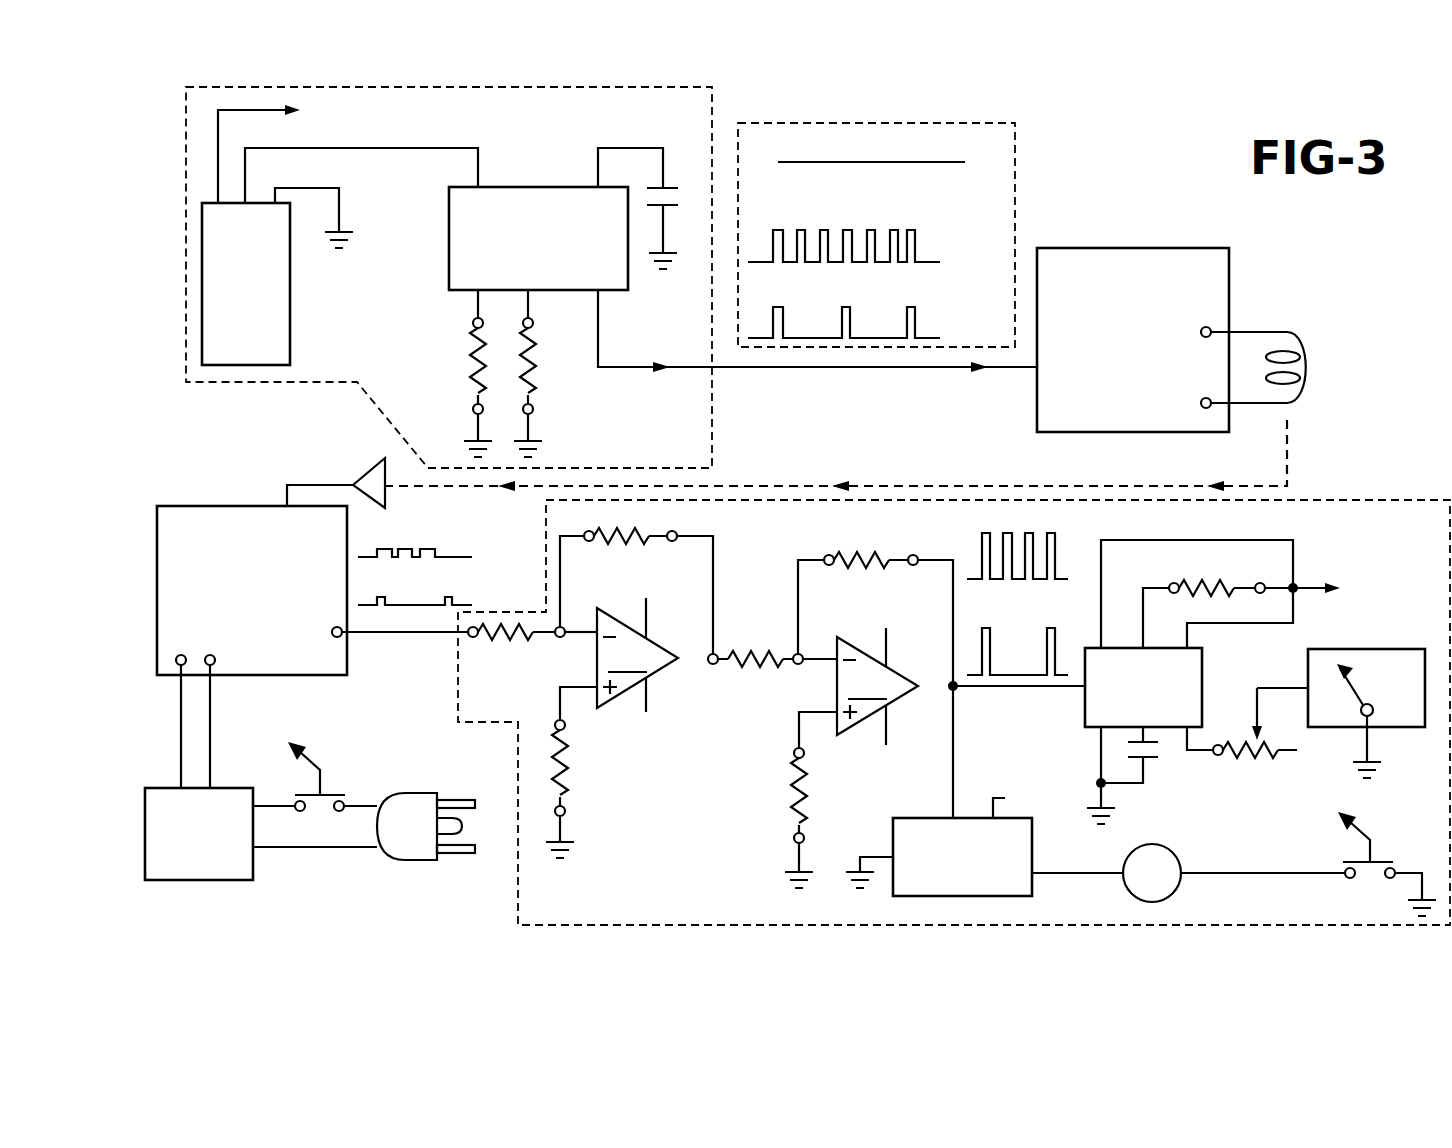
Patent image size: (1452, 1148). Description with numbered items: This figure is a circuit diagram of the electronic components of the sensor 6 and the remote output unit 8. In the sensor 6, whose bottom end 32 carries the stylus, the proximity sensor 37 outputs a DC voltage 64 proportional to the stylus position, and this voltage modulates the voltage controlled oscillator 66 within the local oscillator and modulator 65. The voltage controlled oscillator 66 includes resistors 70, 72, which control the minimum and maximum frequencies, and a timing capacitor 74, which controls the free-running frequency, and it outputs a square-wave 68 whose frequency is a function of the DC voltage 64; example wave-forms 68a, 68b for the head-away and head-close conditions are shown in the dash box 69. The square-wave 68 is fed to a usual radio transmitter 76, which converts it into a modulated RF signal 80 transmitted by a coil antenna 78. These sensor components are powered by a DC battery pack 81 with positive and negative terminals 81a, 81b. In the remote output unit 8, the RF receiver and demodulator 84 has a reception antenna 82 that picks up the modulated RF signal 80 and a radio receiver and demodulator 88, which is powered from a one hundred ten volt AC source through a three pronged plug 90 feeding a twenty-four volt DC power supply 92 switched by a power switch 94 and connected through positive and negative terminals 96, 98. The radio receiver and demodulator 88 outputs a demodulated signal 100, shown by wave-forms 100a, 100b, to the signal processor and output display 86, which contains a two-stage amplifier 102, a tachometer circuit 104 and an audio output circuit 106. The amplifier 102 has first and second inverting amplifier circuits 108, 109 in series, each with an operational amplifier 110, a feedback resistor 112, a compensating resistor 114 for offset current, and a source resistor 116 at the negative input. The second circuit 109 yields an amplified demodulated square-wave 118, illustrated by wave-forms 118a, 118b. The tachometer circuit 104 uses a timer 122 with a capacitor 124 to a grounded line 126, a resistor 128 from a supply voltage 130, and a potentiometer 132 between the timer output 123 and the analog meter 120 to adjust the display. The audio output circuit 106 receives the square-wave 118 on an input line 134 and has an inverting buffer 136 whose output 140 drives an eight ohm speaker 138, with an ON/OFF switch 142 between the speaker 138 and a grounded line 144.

The sensor 6 is at (164, 187).
The remote output unit 8 is at (166, 490).
The bottom end 32 is at (1366, 713).
The proximity sensor 37 is at (290, 280).
The DC voltage 64 is at (415, 148).
The local oscillator and modulator 65 is at (308, 390).
The voltage controlled oscillator 66 is at (545, 187).
The square-wave 68 is at (765, 367).
The wave-form 68a is at (800, 232).
The wave-form 68b is at (778, 308).
The dash box 69 is at (1015, 152).
The resistor 70 is at (466, 398).
The resistor 72 is at (540, 398).
The timing capacitor 74 is at (672, 188).
The radio transmitter 76 is at (1062, 410).
The coil antenna 78 is at (1268, 330).
The modulated RF signal 80 is at (1290, 462).
The DC battery pack 81 is at (383, 112).
The positive terminal 81a is at (235, 110).
The negative terminal 81b is at (303, 188).
The reception antenna 82 is at (360, 479).
The RF receiver and demodulator 84 is at (310, 682).
The signal processor and output display 86 is at (542, 900).
The radio receiver and demodulator 88 is at (263, 506).
The three pronged plug 90 is at (410, 818).
The 24 volt DC power supply 92 is at (200, 880).
The power switch 94 is at (318, 768).
The positive terminal 96 is at (181, 718).
The negative terminal 98 is at (210, 718).
The demodulated signal 100 is at (423, 633).
The wave-form 100a is at (440, 557).
The wave-form 100b is at (440, 605).
The two-stage amplifier 102 is at (737, 615).
The tachometer circuit 104 is at (1303, 532).
The audio output circuit 106 is at (977, 806).
The first inverting amplifier circuit 108 is at (654, 766).
The second inverting amplifier circuit 109 is at (786, 742).
The operational amplifier 110 is at (759, 673).
The feedback resistor 112 is at (656, 531).
The compensating resistor 114 is at (575, 779).
The source resistor 116 is at (517, 647).
The amplified demodulated square-wave 118 is at (935, 690).
The wave-form 118a is at (988, 535).
The wave-form 118b is at (990, 630).
The analog meter 120 is at (1325, 713).
The timer 122 is at (1202, 660).
The output 123 is at (1205, 755).
The capacitor 124 is at (1150, 765).
The grounded line 126 is at (1100, 750).
The resistor 128 is at (1218, 580).
The supply voltage 130 is at (1395, 580).
The potentiometer 132 is at (1262, 752).
The input line 134 is at (955, 698).
The inverting buffer 136 is at (1032, 890).
The 8 ohm speaker 138 is at (1175, 853).
The output 140 is at (1072, 872).
The ON/OFF switch 142 is at (1356, 812).
The grounded line 144 is at (1400, 880).